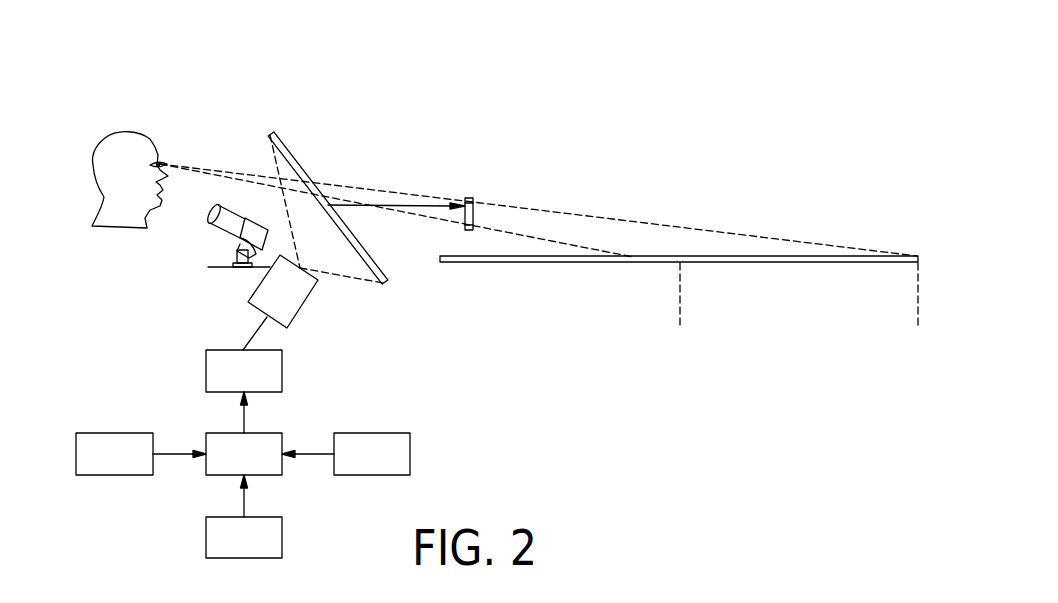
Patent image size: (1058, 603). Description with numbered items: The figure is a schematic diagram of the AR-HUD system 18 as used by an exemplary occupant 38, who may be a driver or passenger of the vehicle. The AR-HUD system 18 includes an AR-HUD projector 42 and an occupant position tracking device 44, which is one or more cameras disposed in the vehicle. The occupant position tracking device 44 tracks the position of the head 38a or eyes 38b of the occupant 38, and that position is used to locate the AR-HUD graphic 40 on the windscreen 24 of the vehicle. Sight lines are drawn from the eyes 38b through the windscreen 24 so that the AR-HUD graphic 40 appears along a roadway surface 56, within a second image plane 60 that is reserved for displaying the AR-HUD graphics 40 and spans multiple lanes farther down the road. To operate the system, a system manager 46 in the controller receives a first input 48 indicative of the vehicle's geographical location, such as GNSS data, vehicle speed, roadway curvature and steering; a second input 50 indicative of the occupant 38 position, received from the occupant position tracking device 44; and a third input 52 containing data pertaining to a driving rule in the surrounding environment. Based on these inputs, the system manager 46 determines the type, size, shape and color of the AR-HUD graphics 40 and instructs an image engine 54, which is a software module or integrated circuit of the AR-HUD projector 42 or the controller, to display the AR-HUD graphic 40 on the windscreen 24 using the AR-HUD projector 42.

The AR-HUD system 18 is at (222, 45).
The occupant 38 is at (74, 114).
The head 38a is at (131, 132).
The eyes 38b is at (159, 162).
The windscreen 24 is at (285, 146).
The AR-HUD graphic 40 is at (469, 198).
The occupant position tracking device 44 is at (233, 245).
The AR-HUD projector 42 is at (269, 304).
The image engine 54 is at (230, 383).
The system manager 46 is at (230, 467).
The third input 52 is at (101, 467).
The second input 50 is at (358, 467).
The first input 48 is at (230, 550).
The roadway surface 56 is at (550, 264).
The second image plane 60 is at (918, 327).